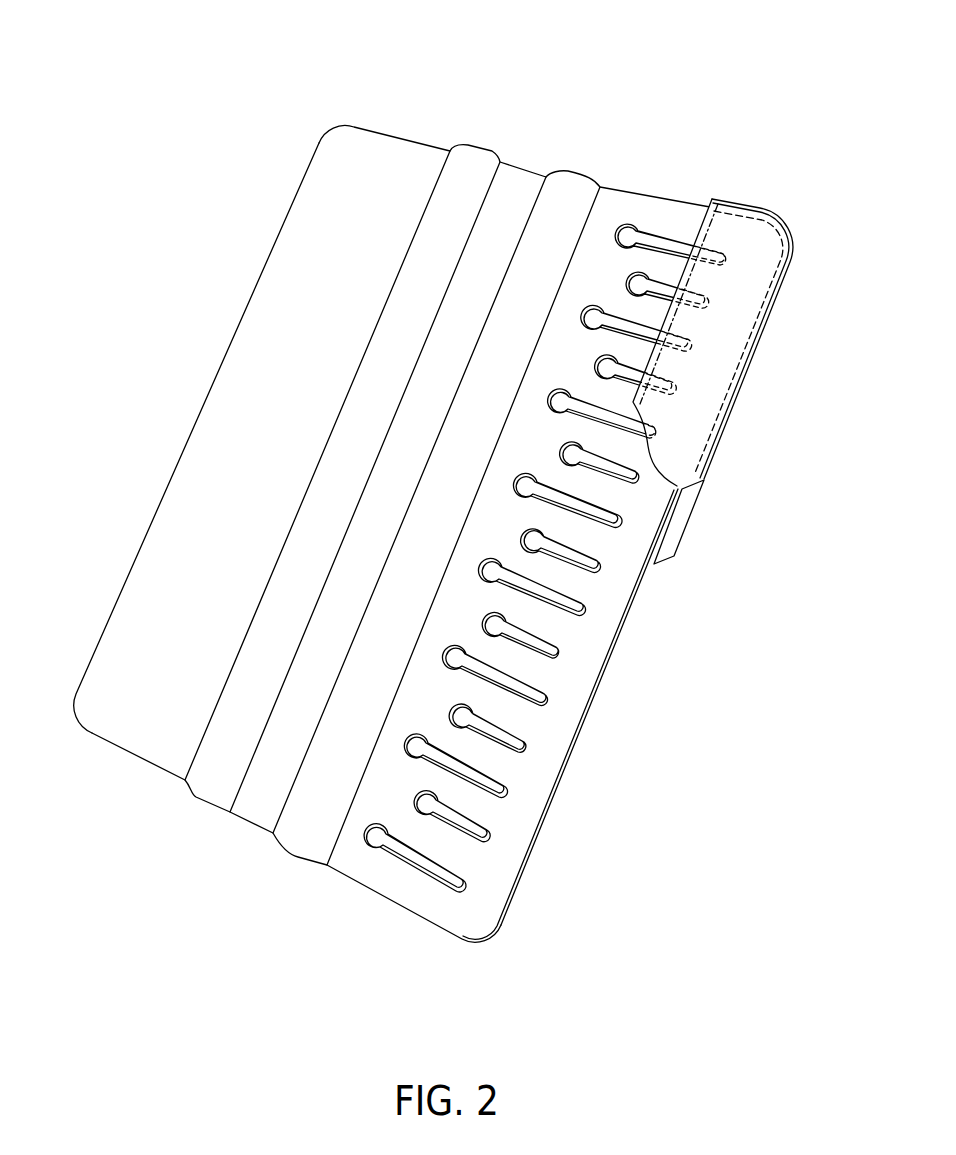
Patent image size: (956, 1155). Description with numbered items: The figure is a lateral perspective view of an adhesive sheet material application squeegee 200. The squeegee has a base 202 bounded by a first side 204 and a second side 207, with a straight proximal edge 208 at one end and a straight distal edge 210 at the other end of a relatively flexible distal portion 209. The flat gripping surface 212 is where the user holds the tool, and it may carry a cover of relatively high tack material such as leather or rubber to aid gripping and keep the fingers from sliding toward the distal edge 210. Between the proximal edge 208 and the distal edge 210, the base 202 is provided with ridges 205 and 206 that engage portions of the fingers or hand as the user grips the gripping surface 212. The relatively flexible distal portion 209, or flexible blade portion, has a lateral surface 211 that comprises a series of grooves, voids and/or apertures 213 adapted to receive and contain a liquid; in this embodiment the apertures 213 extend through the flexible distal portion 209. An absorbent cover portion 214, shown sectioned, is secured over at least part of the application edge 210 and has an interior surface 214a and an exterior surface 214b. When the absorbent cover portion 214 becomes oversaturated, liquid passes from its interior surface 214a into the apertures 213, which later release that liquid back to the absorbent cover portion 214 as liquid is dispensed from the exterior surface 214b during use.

The adhesive sheet material application squeegee 200 is at (650, 78).
The base 202 is at (305, 876).
The first side 204 is at (400, 128).
The ridge 205 is at (477, 158).
The ridge 206 is at (572, 178).
The second side 207 is at (134, 792).
The proximal edge 208 is at (233, 328).
The relatively flexible distal portion 209 is at (460, 959).
The distal edge 210 is at (622, 640).
The lateral surface 211 is at (496, 532).
The gripping surface 212 is at (227, 387).
The apertures 213 is at (575, 604).
The absorbent cover portion 214 is at (675, 359).
The interior surface 214a is at (696, 522).
The exterior surface 214b is at (746, 345).